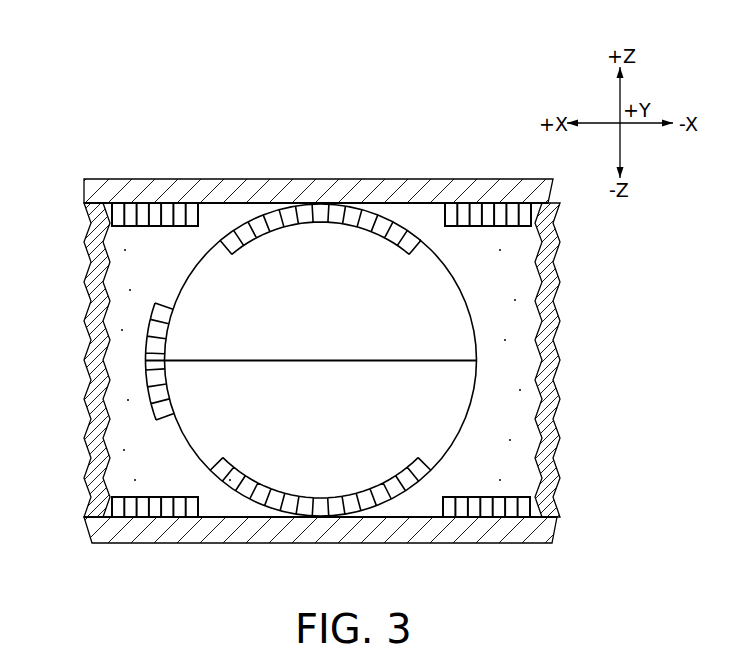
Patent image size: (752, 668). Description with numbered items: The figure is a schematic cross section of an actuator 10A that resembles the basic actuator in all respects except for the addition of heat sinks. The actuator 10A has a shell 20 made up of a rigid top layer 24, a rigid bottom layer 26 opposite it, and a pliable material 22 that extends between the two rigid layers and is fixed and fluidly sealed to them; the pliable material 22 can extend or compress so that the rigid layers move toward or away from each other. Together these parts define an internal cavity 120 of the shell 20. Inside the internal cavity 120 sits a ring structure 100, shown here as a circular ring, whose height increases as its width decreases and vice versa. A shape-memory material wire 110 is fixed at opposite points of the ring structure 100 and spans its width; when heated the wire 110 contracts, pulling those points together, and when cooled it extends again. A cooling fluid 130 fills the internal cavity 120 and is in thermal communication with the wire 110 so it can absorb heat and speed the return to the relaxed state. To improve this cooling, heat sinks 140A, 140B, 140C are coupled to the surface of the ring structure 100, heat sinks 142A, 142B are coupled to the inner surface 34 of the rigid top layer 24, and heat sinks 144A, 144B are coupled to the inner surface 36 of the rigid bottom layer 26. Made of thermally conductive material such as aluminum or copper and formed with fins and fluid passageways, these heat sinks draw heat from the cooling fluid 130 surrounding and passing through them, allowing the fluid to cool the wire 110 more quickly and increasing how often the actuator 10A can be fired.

The actuator 10A is at (312, 302).
The shell 20 is at (300, 321).
The pliable material 22 is at (86, 418).
The rigid top layer 24 is at (388, 198).
The rigid bottom layer 26 is at (282, 540).
The inner surface of the rigid top layer 34 is at (227, 210).
The inner surface of the rigid bottom layer 36 is at (226, 517).
The ring structure 100 is at (462, 436).
The shape-memory material wire 110 is at (352, 364).
The internal cavity 120 is at (363, 357).
The cooling fluid 130 is at (118, 302).
The heat sink 140A is at (290, 212).
The heat sink 140B is at (145, 348).
The heat sink 140C is at (365, 506).
The heat sink 142A is at (153, 208).
The heat sink 142B is at (474, 212).
The heat sink 144A is at (153, 510).
The heat sink 144B is at (498, 510).